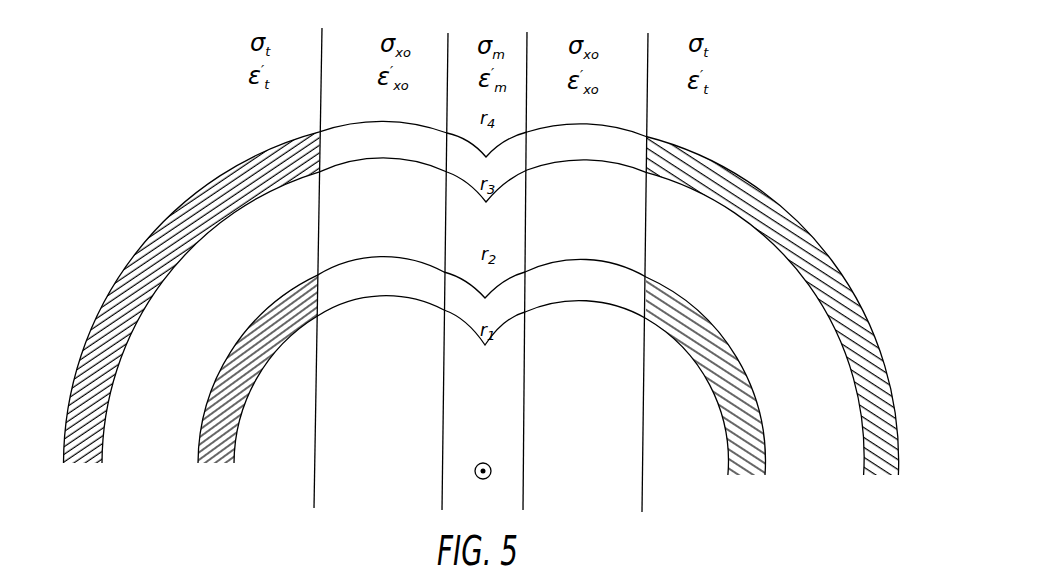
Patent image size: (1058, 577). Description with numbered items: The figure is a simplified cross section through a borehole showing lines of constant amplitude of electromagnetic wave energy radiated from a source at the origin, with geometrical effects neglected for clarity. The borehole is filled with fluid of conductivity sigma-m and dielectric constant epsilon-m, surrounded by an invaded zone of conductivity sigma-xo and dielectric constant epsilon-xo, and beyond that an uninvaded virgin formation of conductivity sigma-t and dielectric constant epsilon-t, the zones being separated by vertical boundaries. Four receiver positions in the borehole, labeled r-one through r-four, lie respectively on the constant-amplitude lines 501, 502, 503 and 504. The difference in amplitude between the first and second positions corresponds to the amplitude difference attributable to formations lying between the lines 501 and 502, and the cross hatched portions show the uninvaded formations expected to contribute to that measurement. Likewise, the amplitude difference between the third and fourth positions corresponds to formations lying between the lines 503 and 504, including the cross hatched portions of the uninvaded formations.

The line of constant amplitude 501 is at (585, 300).
The line of constant amplitude 502 is at (610, 266).
The line of constant amplitude 503 is at (573, 161).
The line of constant amplitude 504 is at (603, 124).